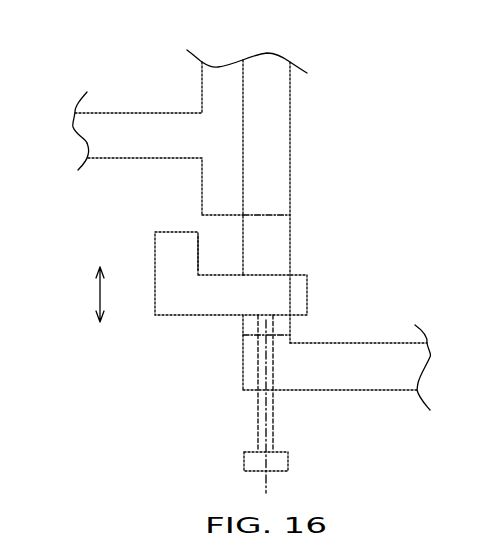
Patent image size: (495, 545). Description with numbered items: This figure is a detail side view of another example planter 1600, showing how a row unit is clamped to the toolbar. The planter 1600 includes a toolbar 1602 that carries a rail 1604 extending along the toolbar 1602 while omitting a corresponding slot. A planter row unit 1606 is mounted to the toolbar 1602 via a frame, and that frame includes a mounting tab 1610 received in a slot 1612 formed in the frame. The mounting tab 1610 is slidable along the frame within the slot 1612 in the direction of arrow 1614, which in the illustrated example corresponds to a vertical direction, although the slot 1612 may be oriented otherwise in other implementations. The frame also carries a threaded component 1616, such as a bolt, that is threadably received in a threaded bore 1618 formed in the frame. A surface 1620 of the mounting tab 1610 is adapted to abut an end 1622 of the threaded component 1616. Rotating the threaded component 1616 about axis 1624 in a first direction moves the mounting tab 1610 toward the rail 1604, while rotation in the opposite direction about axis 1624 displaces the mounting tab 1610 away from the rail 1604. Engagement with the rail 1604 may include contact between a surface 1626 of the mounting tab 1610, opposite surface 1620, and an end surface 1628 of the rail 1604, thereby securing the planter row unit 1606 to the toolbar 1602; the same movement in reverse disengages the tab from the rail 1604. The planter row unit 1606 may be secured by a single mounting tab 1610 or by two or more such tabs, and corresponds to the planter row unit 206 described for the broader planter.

The planter 1600 is at (332, 100).
The toolbar 1602 is at (123, 113).
The rail 1604 is at (202, 188).
The planter row unit 1606 is at (352, 201).
The mounting tab 1610 is at (168, 315).
The slot 1612 is at (265, 215).
The arrow 1614 is at (100, 286).
The threaded component 1616 is at (290, 462).
The threaded bore 1618 is at (273, 367).
The surface 1620 is at (215, 318).
The end 1622 is at (264, 315).
The axis 1624 is at (266, 487).
The surface 1626 is at (218, 272).
The end surface 1628 is at (203, 220).
The planter row unit 206 is at (391, 392).